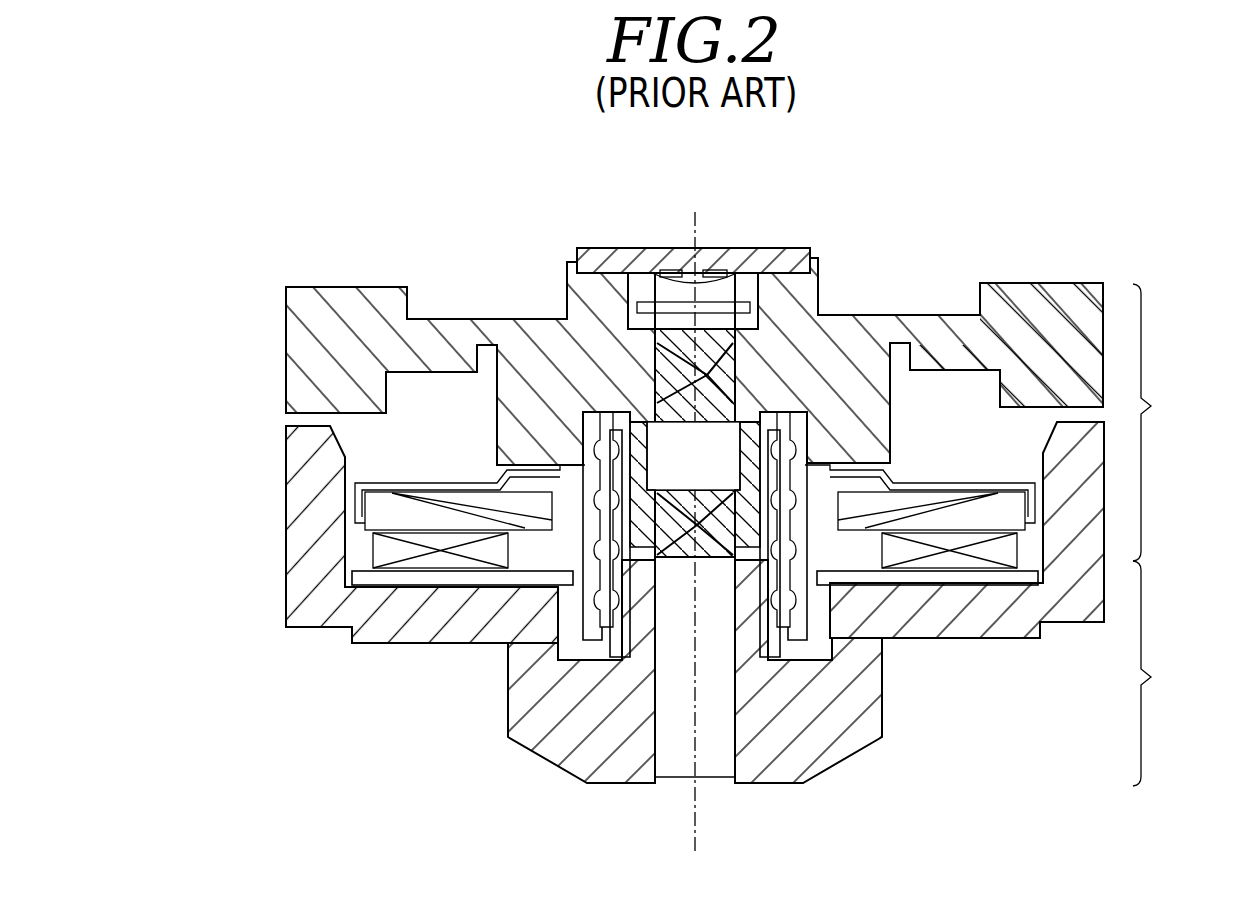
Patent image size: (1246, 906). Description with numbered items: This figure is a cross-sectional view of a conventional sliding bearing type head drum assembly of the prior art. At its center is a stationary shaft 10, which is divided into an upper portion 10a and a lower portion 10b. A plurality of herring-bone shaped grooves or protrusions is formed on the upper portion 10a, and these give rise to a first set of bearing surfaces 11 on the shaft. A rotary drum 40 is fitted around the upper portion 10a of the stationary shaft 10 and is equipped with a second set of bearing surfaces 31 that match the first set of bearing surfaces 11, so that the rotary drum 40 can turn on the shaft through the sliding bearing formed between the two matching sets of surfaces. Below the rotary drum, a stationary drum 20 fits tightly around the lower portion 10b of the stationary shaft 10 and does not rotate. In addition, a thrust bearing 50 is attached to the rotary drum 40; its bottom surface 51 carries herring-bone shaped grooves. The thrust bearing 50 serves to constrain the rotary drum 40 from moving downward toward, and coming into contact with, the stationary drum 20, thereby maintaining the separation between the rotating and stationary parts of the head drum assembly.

The stationary shaft 10 is at (696, 760).
The upper portion 10a is at (1178, 422).
The lower portion 10b is at (1178, 673).
The first set of bearing surfaces 11 is at (740, 373).
The stationary drum 20 is at (527, 733).
The second set of bearing surfaces 31 is at (737, 407).
The rotary drum 40 is at (298, 338).
The thrust bearing 50 is at (708, 277).
The bottom surface 51 is at (680, 277).